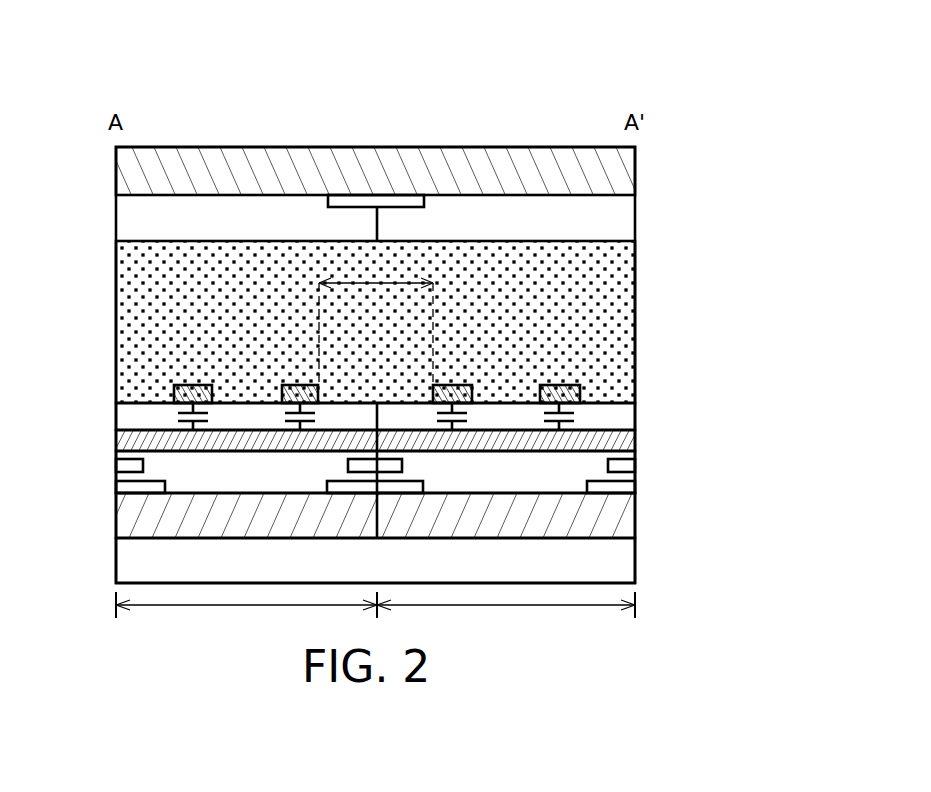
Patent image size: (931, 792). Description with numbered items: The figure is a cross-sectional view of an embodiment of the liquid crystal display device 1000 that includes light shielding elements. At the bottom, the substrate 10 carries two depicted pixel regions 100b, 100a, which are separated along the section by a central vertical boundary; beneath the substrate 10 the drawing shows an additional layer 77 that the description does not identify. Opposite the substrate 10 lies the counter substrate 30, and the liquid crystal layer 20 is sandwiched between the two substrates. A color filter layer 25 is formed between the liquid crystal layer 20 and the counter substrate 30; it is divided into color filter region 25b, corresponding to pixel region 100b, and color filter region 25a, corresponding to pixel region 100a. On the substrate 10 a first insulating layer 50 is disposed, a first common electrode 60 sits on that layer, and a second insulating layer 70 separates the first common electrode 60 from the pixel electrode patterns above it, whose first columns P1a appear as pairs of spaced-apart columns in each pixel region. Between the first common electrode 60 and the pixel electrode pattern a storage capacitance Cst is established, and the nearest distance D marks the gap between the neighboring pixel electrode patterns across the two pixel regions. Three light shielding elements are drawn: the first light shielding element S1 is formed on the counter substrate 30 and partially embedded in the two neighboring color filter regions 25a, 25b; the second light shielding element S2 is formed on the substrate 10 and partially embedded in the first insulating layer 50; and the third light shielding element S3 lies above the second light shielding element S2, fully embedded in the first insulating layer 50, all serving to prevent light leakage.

The liquid crystal display device 1000 is at (680, 142).
The counter substrate 30 is at (626, 172).
The color filter layer 25 is at (375, 123).
The color filter region 25a is at (485, 147).
The color filter region 25b is at (259, 208).
The first light shielding element S1 is at (400, 200).
The liquid crystal layer 20 is at (626, 270).
The nearest distance D is at (376, 320).
The first column P1a is at (193, 385).
The second insulating layer 70 is at (369, 420).
The storage capacitance Cst is at (308, 420).
The first common electrode 60 is at (626, 438).
The first insulating layer 50 is at (626, 467).
The third light shielding element S3 is at (116, 465).
The second light shielding element S2 is at (116, 488).
The substrate 10 is at (626, 513).
The polarizer / backlight layer 77 is at (626, 558).
The pixel region 100b is at (246, 619).
The pixel region 100a is at (506, 619).